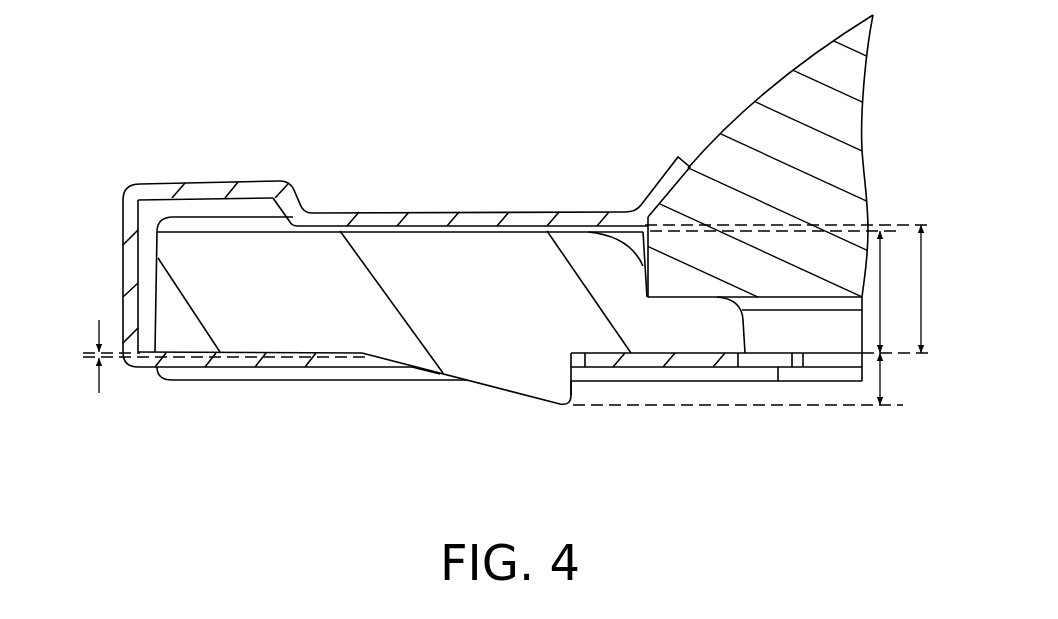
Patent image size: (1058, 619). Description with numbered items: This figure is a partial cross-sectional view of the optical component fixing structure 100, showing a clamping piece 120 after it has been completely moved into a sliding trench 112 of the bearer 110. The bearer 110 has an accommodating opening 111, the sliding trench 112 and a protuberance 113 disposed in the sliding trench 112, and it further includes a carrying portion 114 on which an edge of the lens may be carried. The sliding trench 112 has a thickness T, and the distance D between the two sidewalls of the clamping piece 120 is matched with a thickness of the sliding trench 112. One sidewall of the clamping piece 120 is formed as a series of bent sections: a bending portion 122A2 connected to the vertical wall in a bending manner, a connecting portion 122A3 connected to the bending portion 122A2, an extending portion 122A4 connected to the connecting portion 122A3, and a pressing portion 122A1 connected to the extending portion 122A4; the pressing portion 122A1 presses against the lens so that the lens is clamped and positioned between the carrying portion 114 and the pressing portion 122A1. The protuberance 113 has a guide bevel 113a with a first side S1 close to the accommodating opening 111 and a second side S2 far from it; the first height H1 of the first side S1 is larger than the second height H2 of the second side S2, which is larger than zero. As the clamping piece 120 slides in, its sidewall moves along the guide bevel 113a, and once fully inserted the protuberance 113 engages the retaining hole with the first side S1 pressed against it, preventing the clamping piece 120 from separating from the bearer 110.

The optical component fixing structure 100 is at (145, 160).
The bearer 110 is at (520, 275).
The accommodating opening 111 is at (643, 267).
The sliding trench 112 is at (242, 356).
The protuberance 113 is at (364, 415).
The guide bevel 113a is at (490, 390).
The carrying portion 114 is at (730, 330).
The clamping piece 120 is at (103, 277).
The pressing portion 122A1 is at (660, 180).
The bending portion 122A2 is at (205, 190).
The connecting portion 122A3 is at (295, 203).
The extending portion 122A4 is at (435, 218).
The first side S1 is at (577, 390).
The second side S2 is at (362, 373).
The first height H1 is at (899, 379).
The second height H2 is at (80, 356).
The thickness T is at (891, 292).
The distance D is at (931, 289).